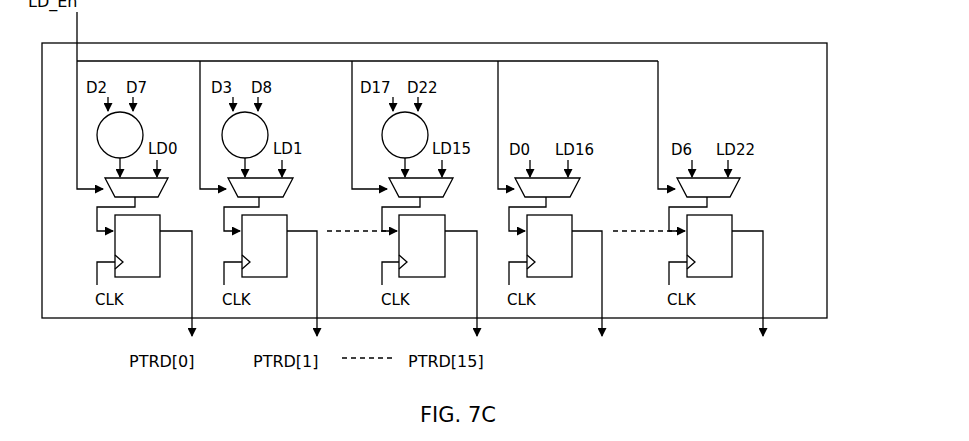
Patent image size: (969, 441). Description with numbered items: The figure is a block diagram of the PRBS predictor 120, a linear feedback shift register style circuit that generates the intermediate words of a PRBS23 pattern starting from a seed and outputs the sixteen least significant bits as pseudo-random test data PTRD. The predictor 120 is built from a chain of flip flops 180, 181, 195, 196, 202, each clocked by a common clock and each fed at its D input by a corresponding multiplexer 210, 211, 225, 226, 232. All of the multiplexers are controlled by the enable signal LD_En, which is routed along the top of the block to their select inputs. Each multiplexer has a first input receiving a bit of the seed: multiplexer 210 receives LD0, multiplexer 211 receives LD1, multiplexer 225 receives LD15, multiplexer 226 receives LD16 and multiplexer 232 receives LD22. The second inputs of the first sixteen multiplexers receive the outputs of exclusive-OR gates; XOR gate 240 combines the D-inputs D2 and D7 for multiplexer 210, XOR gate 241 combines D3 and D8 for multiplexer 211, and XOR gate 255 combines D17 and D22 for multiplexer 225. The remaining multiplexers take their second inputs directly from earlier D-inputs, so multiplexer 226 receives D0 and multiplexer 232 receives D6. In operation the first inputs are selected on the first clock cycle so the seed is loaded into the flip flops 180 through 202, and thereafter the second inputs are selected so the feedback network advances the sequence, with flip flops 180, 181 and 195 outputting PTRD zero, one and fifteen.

The PRBS predictor 120 is at (648, 43).
The XOR gate 240 is at (141, 123).
The XOR gate 241 is at (266, 123).
The XOR gate 255 is at (426, 123).
The multiplexer 210 is at (158, 190).
The multiplexer 211 is at (283, 190).
The multiplexer 225 is at (443, 190).
The multiplexer 226 is at (570, 190).
The multiplexer 232 is at (730, 190).
The flip flop 180 is at (161, 272).
The flip flop 181 is at (288, 272).
The flip flop 195 is at (446, 272).
The flip flop 196 is at (573, 272).
The flip flop 202 is at (733, 272).